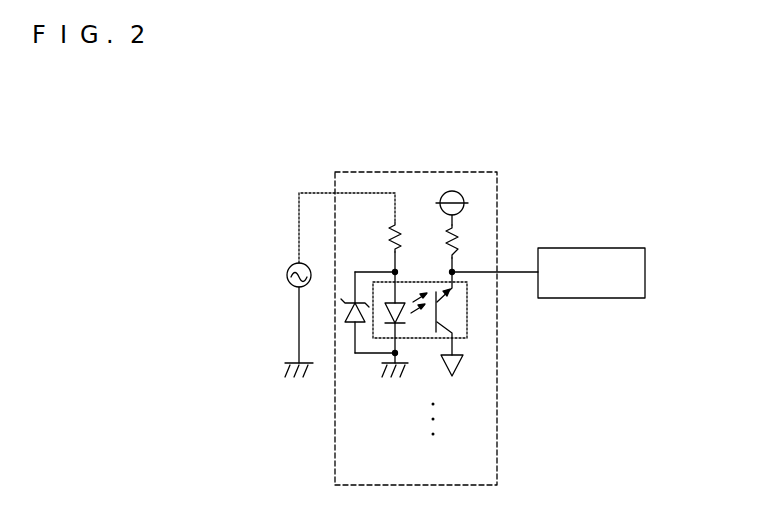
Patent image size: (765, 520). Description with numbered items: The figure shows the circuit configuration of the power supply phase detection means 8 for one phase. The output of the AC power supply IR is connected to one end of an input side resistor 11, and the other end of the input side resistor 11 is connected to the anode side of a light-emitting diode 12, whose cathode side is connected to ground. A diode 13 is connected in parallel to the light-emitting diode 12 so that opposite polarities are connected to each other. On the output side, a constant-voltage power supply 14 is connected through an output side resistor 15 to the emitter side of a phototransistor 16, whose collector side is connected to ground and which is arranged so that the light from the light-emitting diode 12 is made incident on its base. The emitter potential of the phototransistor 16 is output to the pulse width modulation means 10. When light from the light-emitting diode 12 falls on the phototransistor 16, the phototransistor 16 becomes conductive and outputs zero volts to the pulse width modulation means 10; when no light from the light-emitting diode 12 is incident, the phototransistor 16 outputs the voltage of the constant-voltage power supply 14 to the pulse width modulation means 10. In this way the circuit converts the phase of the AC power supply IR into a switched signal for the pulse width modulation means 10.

The power supply phase detection means 8 is at (402, 172).
The pulse width modulation means 10 is at (545, 249).
The input side resistor 11 is at (392, 237).
The light-emitting diode 12 is at (400, 293).
The diode 13 is at (350, 329).
The constant-voltage power supply 14 is at (463, 195).
The output side resistor 15 is at (461, 236).
The phototransistor 16 is at (457, 321).
The AC power supply IR is at (290, 267).